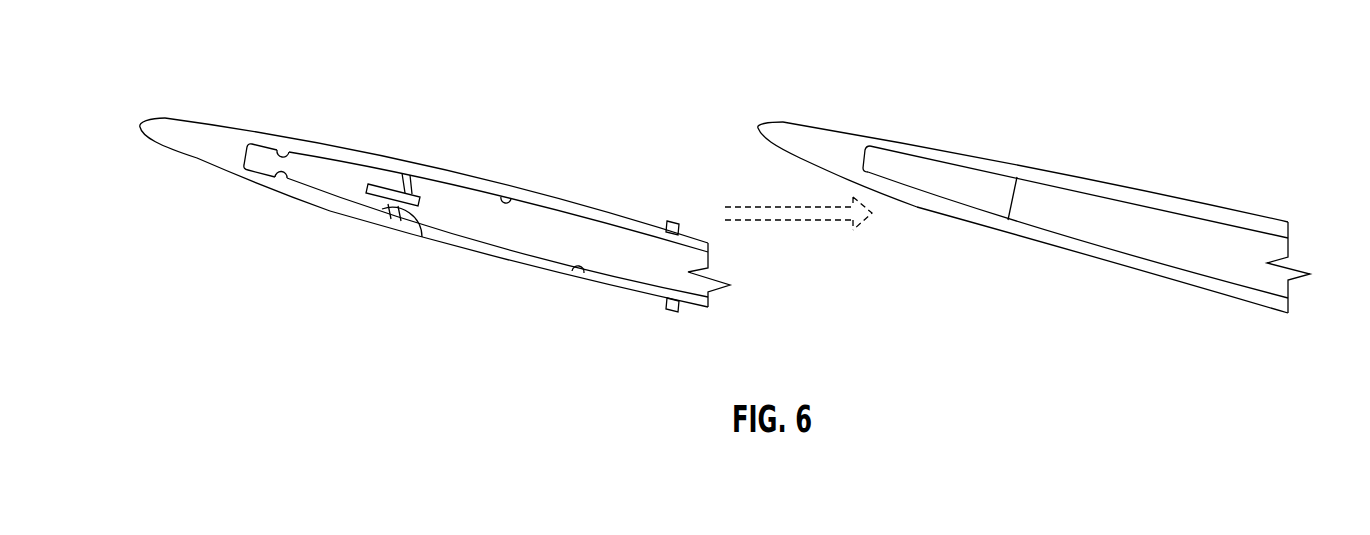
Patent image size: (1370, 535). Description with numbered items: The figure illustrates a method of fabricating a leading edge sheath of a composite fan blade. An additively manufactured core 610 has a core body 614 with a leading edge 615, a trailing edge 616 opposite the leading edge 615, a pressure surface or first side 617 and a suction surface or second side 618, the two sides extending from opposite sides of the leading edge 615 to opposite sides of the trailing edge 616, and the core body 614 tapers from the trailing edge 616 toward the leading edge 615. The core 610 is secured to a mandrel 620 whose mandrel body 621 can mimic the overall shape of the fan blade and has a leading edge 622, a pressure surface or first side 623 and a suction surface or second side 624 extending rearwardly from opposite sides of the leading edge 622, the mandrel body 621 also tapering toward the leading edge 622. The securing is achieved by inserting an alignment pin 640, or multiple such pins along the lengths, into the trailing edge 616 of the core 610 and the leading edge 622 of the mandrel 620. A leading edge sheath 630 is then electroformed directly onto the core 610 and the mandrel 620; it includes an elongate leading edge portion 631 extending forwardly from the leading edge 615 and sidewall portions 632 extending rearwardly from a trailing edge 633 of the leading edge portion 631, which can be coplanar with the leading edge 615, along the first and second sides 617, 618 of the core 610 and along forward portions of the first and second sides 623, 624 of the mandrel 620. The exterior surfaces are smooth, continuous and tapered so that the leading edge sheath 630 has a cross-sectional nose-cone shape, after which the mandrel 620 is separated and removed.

The core 610 is at (720, 210).
The core body 614 is at (270, 188).
The leading edge 615 is at (245, 165).
The trailing edge 616 is at (390, 210).
The first side 617 is at (282, 181).
The second side 618 is at (290, 150).
The mandrel 620 is at (509, 219).
The mandrel body 621 is at (497, 262).
The leading edge 622 is at (422, 238).
The first side 623 is at (575, 278).
The second side 624 is at (503, 191).
The leading edge sheath 630 is at (709, 146).
The elongate leading edge portion 631 is at (172, 140).
The sidewall portions 632 is at (670, 222).
The trailing edge 633 is at (243, 128).
The alignment pin 640 is at (397, 204).